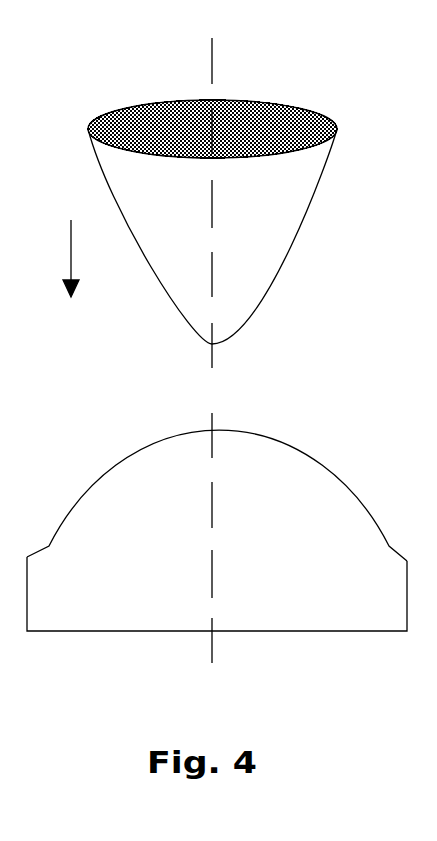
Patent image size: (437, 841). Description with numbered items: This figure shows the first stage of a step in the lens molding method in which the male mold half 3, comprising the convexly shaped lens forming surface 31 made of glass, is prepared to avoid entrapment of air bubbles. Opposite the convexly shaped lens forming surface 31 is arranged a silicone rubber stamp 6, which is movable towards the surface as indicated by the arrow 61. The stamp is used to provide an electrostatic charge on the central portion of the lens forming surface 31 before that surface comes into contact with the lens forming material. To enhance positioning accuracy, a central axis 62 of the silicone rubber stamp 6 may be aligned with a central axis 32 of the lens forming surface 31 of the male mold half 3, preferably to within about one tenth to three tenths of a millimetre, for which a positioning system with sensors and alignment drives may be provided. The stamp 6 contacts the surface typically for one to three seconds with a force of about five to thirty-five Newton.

The central axis 62 is at (208, 70).
The silicone rubber stamp 6 is at (255, 203).
The arrow 61 is at (72, 260).
The convexly shaped lens forming surface 31 is at (307, 455).
The central axis 32 is at (212, 502).
The male mold half 3 is at (302, 593).